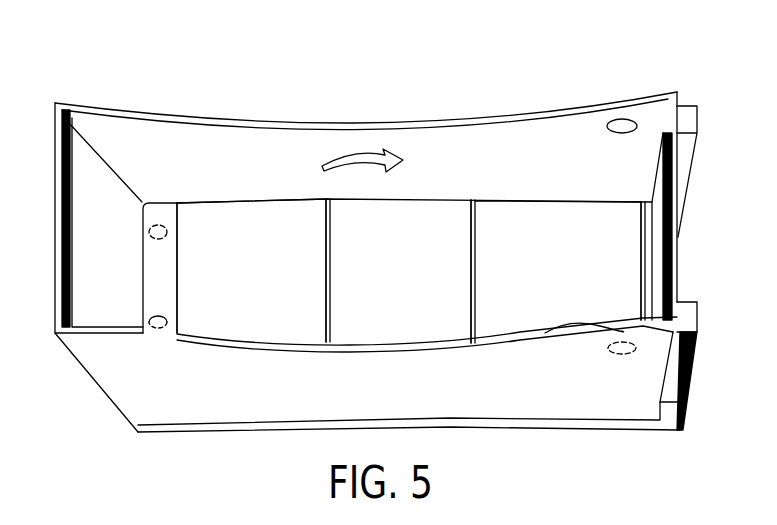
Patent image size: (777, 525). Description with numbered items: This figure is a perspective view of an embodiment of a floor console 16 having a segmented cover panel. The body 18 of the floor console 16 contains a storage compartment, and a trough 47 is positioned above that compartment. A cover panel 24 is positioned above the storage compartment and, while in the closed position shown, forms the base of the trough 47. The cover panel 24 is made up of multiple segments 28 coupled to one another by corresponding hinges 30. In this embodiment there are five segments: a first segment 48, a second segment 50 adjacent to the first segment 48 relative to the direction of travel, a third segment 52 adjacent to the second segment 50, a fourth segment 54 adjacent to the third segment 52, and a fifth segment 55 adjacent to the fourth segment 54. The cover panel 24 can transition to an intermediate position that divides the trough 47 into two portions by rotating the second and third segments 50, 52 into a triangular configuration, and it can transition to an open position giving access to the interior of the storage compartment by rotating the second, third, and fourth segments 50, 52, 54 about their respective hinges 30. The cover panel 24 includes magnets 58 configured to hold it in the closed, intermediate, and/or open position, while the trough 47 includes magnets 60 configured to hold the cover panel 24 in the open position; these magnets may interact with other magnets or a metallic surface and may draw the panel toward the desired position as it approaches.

The floor console 16 is at (398, 48).
The body 18 is at (565, 385).
The cover panel 24 is at (253, 208).
The segments 28 is at (232, 212).
The hinges 30 is at (326, 262).
The trough 47 is at (561, 128).
The first segment 48 is at (172, 285).
The second segment 50 is at (263, 283).
The third segment 52 is at (407, 283).
The fourth segment 54 is at (557, 283).
The fifth segment 55 is at (658, 263).
The magnets 58 is at (158, 222).
The magnets 60 is at (637, 124).